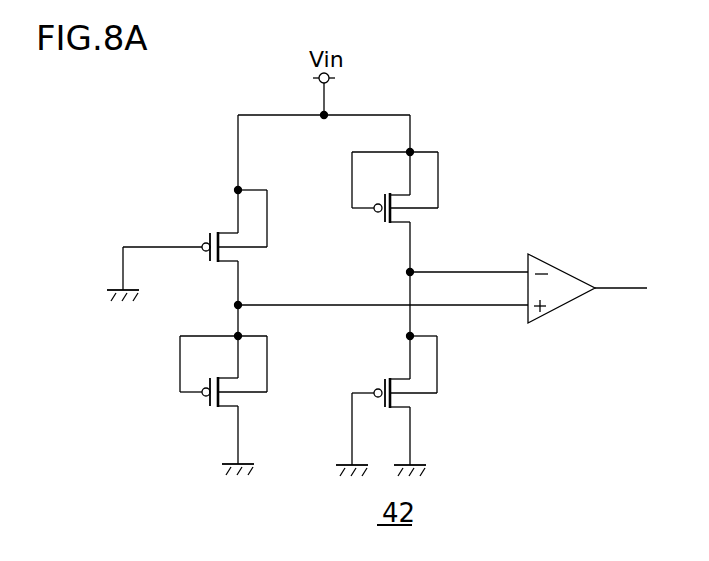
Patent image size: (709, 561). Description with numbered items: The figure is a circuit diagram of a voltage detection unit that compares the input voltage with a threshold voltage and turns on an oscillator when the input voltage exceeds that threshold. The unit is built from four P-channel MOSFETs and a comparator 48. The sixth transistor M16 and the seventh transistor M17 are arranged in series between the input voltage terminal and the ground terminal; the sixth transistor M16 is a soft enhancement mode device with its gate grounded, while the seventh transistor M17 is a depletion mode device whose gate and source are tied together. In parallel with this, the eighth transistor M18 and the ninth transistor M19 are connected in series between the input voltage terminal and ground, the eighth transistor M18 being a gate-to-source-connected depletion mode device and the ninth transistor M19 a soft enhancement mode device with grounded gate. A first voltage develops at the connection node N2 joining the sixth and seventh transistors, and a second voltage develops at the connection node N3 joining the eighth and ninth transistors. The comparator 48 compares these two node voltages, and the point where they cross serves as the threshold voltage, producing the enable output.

The sixth transistor M16 is at (216, 228).
The seventh transistor M17 is at (216, 412).
The eighth transistor M18 is at (385, 229).
The ninth transistor M19 is at (417, 401).
The connection node N2 is at (248, 295).
The connection node N3 is at (418, 265).
The comparator 48 is at (562, 306).